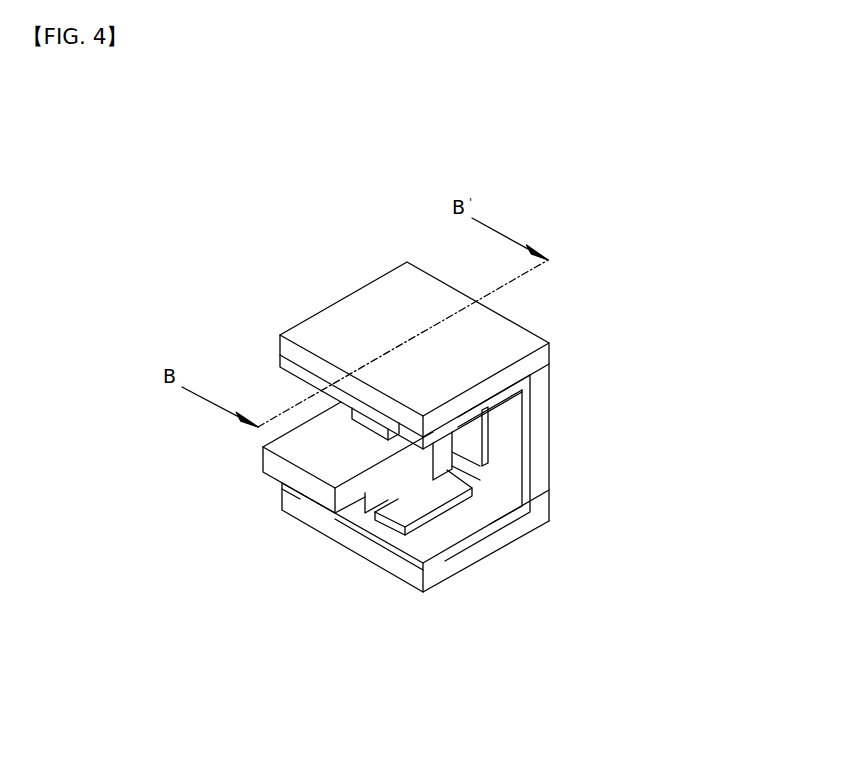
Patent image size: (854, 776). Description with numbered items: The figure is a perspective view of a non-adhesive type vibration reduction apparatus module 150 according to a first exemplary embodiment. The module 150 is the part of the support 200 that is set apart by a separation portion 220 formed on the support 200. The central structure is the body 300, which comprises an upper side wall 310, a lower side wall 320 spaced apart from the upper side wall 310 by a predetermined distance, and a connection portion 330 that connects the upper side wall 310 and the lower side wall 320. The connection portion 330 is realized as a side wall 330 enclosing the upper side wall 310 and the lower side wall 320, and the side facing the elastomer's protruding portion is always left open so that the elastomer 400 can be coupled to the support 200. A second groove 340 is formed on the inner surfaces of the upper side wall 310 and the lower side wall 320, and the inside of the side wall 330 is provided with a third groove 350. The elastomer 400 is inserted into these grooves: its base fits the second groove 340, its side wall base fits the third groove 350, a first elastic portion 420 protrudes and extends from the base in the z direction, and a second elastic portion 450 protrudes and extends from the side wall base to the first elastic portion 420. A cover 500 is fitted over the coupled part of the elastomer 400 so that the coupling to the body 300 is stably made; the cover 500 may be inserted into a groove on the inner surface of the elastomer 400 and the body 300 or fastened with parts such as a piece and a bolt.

The module 150 is at (559, 183).
The support 200 is at (250, 483).
The separation portion 220 is at (292, 503).
The body 300 is at (637, 310).
The upper side wall 310 is at (497, 334).
The lower side wall 320 is at (536, 537).
The connection portion 330 is at (545, 438).
The second groove 340 is at (530, 377).
The third groove 350 is at (523, 472).
The elastomer 400 is at (402, 527).
The first elastic portion 420 is at (460, 428).
The second elastic portion 450 is at (516, 526).
The cover 500 is at (280, 357).